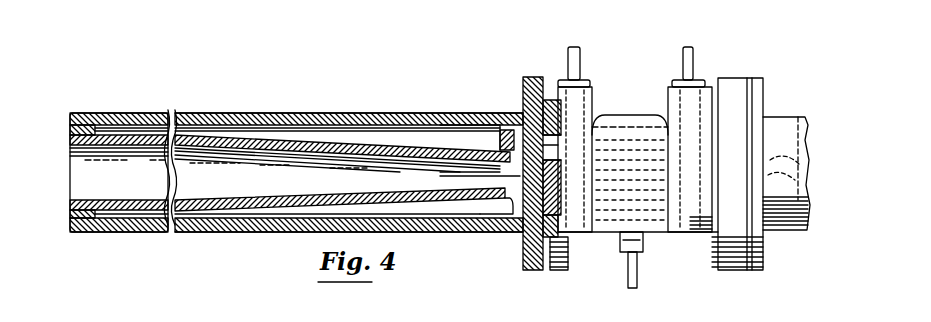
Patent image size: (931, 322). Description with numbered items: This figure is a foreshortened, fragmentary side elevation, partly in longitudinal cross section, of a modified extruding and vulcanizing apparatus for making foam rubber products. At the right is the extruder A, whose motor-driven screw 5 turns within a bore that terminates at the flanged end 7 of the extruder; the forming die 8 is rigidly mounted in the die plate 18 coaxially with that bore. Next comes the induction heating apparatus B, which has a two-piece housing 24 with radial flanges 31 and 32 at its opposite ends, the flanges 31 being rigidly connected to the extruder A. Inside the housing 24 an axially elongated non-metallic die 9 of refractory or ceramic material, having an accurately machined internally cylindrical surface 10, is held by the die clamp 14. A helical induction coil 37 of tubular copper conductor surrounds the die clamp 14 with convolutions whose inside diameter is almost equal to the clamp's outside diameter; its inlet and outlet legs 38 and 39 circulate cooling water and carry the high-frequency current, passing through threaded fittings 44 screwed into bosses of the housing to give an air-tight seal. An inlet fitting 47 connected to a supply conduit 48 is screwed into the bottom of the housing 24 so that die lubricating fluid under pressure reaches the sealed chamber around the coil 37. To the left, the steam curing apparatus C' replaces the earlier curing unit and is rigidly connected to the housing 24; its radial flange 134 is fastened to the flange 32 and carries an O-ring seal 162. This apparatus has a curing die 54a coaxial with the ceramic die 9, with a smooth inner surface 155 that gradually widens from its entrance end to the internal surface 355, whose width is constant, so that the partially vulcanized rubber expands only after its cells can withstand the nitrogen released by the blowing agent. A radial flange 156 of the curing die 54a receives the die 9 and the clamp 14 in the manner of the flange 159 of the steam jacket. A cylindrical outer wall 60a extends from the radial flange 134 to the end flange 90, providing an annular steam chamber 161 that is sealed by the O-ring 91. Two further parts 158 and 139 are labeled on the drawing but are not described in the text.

The end flange 90 is at (72, 118).
The O-ring 91 is at (72, 222).
The internal surface 355 is at (108, 142).
The curing die 54a is at (96, 203).
The annular steam chamber 161 is at (131, 218).
The cylindrical outer wall 60a is at (276, 113).
The smooth inner surface 155 is at (308, 195).
The non-metallic die 9 is at (477, 139).
The internally cylindrical surface 10 is at (510, 182).
The flange of the steam jacket 159 is at (503, 213).
The die clamp 14 is at (520, 113).
The radial flange 134 is at (530, 77).
The radial flange of the curing die 156 is at (520, 258).
The ring 158 is at (516, 234).
The O-ring seal 162 is at (520, 258).
The radial flange 32 is at (570, 272).
The outlet leg 39 is at (568, 52).
The threaded fitting 44 is at (600, 77).
The inlet leg 38 is at (690, 48).
The induction heating apparatus B is at (622, 110).
The two-piece housing 24 is at (640, 114).
The die plate 18 is at (762, 55).
The motor-driven screw 5 is at (800, 116).
The extruder A is at (788, 108).
The forming die 8 is at (770, 243).
The flanged end 7 is at (754, 271).
The radial flange 31 is at (720, 271).
The helical induction coil 37 is at (660, 238).
The inlet fitting 47 is at (618, 240).
The supply conduit 48 is at (638, 275).
The curing apparatus C' is at (133, 71).
The element 139 is at (384, 316).